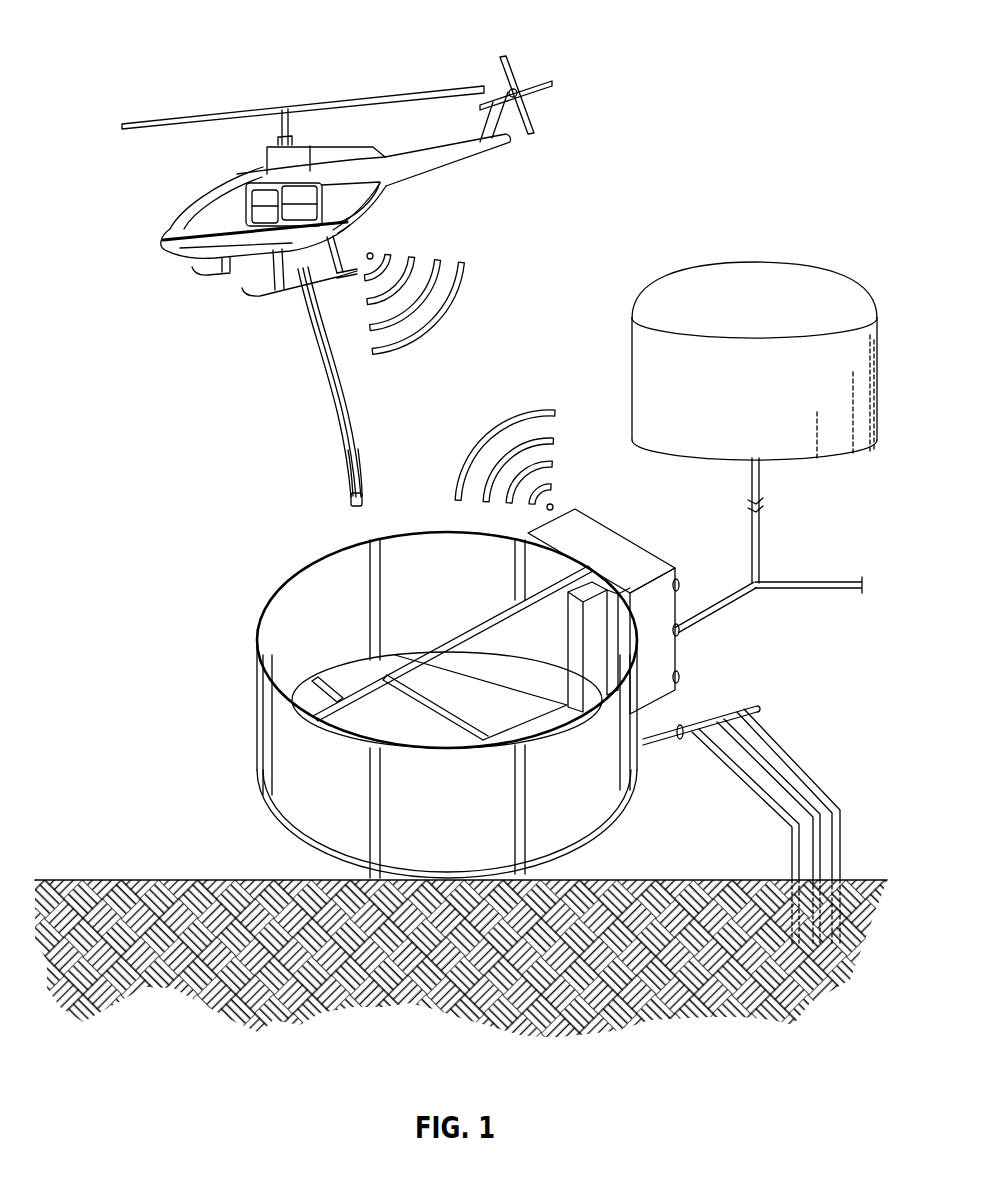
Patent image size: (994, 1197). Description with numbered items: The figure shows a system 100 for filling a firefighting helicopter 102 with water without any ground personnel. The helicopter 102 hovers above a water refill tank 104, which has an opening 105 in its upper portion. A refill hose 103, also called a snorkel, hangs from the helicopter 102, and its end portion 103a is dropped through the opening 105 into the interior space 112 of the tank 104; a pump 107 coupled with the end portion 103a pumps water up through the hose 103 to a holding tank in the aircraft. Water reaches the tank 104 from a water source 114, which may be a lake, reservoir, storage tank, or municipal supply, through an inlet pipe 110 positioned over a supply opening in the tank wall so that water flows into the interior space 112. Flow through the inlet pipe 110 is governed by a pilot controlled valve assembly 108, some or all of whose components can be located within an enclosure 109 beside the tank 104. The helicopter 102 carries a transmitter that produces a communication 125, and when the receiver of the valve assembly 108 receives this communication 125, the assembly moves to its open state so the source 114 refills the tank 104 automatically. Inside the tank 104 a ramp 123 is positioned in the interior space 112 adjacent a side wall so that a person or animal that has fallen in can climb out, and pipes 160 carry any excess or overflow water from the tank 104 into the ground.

The system 100 is at (110, 42).
The firefighting helicopter 102 is at (150, 221).
The refill hose 103 is at (333, 377).
The end portion 103a is at (352, 466).
The pump 107 is at (350, 497).
The communication 125 is at (470, 287).
The water source 114 is at (628, 375).
The inlet pipe 110 is at (710, 614).
The enclosure 109 is at (613, 527).
The pilot controlled valve assembly 108 is at (645, 537).
The water refill tank 104 is at (255, 760).
The opening 105 is at (317, 563).
The interior space 112 is at (303, 655).
The ramp 123 is at (510, 672).
The pipes 160 is at (846, 849).